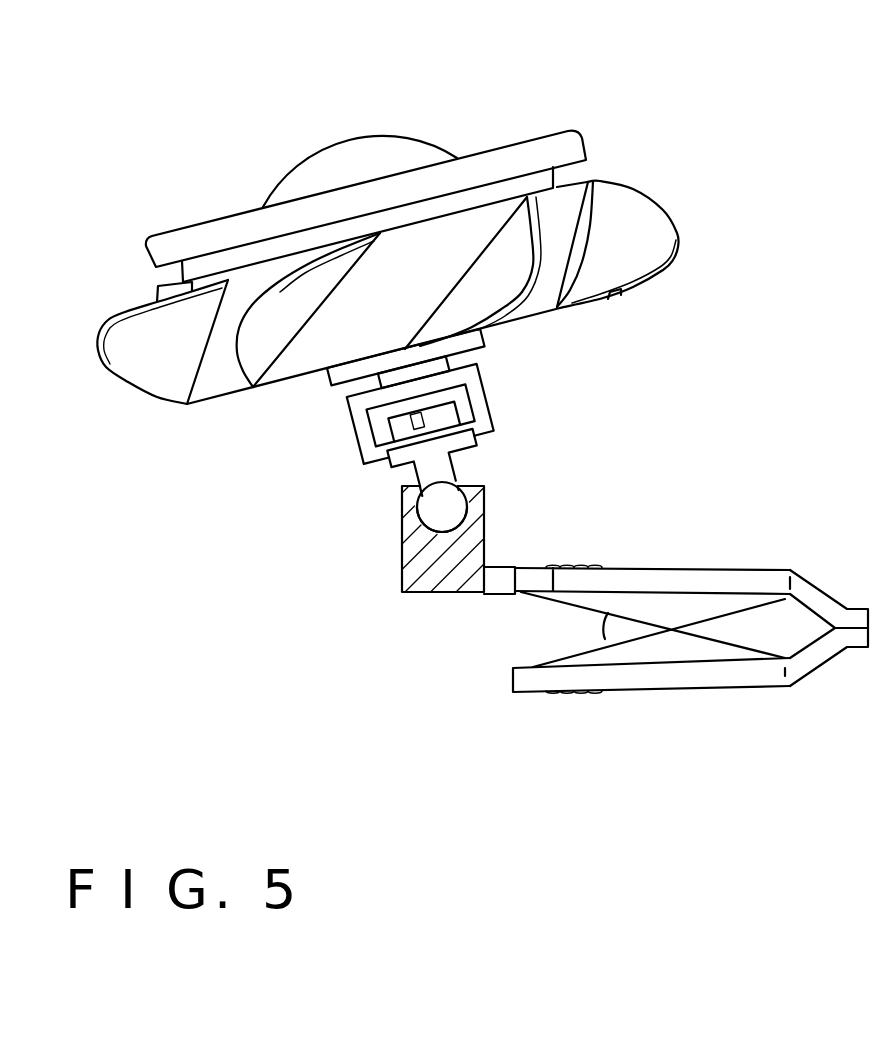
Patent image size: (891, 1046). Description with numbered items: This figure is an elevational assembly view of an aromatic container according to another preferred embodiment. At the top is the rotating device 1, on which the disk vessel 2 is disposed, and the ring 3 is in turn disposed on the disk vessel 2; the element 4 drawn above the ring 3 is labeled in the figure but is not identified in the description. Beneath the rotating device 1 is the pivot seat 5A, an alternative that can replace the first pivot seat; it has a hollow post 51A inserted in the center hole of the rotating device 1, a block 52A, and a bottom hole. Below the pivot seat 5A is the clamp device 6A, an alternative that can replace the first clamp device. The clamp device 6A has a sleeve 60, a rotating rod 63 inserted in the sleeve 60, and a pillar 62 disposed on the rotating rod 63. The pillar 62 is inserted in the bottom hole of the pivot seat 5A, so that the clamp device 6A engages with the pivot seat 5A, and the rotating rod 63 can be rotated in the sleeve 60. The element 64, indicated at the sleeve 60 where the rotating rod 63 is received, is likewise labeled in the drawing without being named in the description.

The rotating device 1 is at (567, 268).
The disk vessel 2 is at (555, 176).
The ring 3 is at (507, 148).
The dome 4 is at (330, 155).
The hollow post 51A is at (480, 350).
The pivot seat 5A is at (487, 400).
The block 52A is at (370, 438).
The pillar 62 is at (420, 427).
The rotating rod 63 is at (428, 475).
The socket 64 is at (410, 500).
The sleeve 60 is at (402, 587).
The clamp device 6A is at (654, 689).